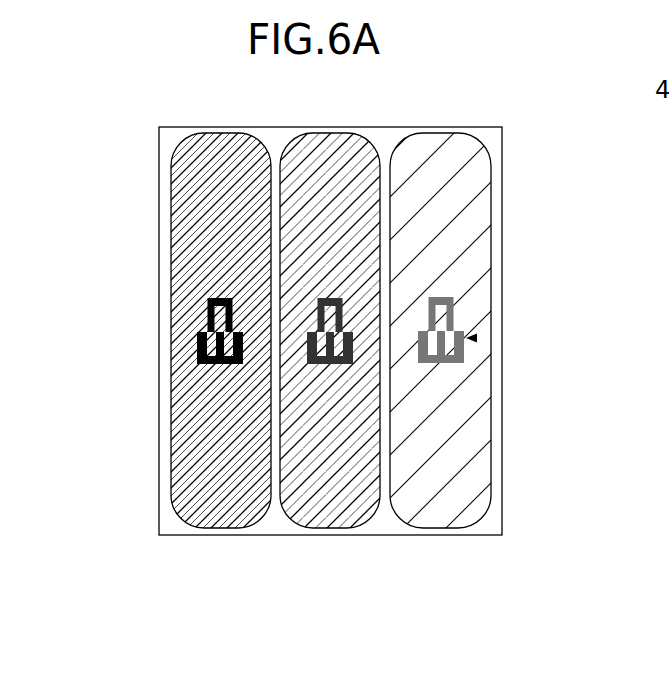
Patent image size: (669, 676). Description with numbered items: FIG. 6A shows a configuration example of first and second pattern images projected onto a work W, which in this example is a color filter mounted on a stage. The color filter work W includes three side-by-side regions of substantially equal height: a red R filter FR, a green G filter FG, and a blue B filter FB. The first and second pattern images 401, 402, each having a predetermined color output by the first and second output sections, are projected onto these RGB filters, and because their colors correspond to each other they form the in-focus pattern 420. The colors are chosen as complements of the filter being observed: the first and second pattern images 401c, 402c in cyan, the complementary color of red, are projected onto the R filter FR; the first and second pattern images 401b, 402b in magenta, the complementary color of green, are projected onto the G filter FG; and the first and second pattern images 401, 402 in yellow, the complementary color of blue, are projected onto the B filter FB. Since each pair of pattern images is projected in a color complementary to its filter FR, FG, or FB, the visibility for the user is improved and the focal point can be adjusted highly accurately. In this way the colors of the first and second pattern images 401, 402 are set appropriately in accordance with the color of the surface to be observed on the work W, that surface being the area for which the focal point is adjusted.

The work W is at (383, 530).
The red R filter FR is at (205, 138).
The green G filter FG is at (346, 138).
The blue B filter FB is at (455, 138).
The first pattern image in cyan 401c is at (207, 300).
The second pattern image in cyan 402c is at (198, 345).
The first pattern image in magenta 401b is at (327, 298).
The second pattern image in magenta 402b is at (327, 364).
The first pattern image 401 is at (455, 313).
The second pattern image 402 is at (462, 352).
The in-focus pattern 420 is at (477, 338).